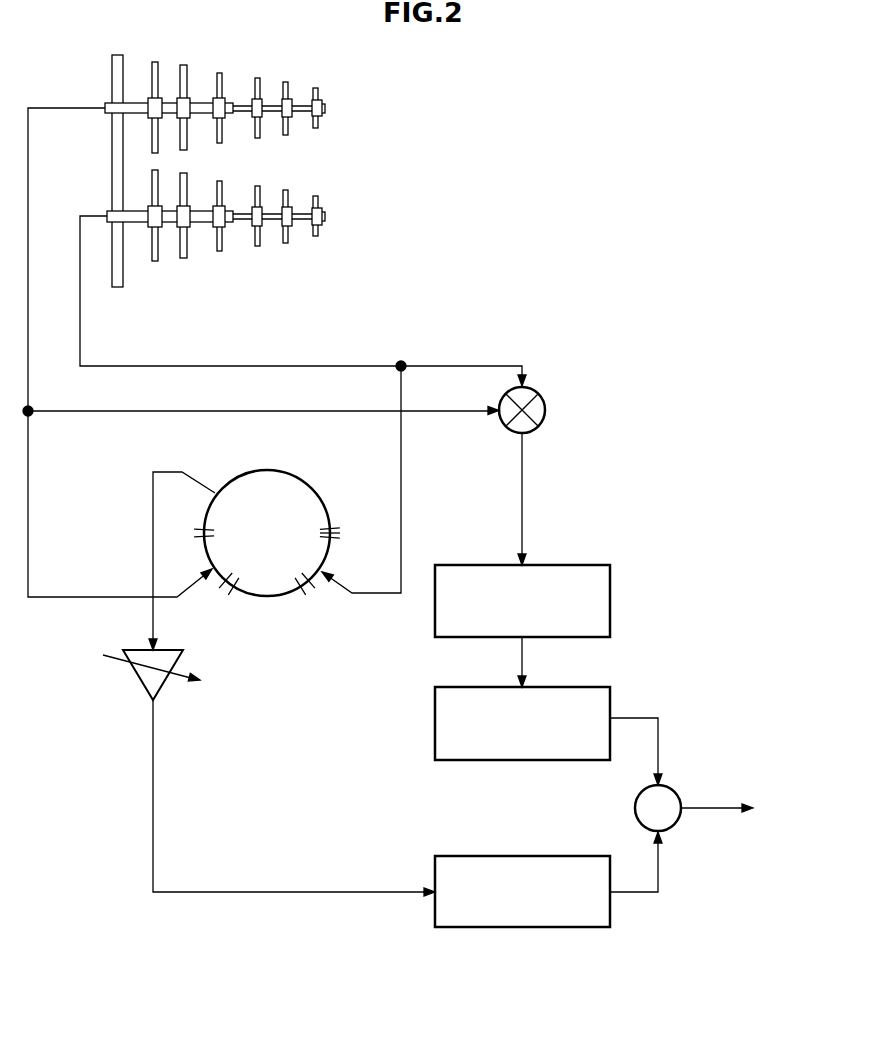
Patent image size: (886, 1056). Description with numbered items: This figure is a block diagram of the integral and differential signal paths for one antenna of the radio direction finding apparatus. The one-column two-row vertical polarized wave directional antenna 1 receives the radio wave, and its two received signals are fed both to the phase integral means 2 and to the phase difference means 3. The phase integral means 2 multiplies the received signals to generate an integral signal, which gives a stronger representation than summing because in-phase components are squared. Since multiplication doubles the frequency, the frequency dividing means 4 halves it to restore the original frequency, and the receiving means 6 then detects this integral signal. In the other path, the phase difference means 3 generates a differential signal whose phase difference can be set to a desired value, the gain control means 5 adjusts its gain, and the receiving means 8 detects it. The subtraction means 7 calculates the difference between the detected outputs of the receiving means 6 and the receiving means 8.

The directional antenna 1 is at (113, 287).
The phase integral means 2 is at (534, 387).
The phase difference means 3 is at (249, 597).
The frequency dividing means 4 is at (550, 638).
The gain control means 5 is at (163, 688).
The receiving means 6 is at (555, 761).
The subtraction means 7 is at (666, 832).
The receiving means 8 is at (555, 929).